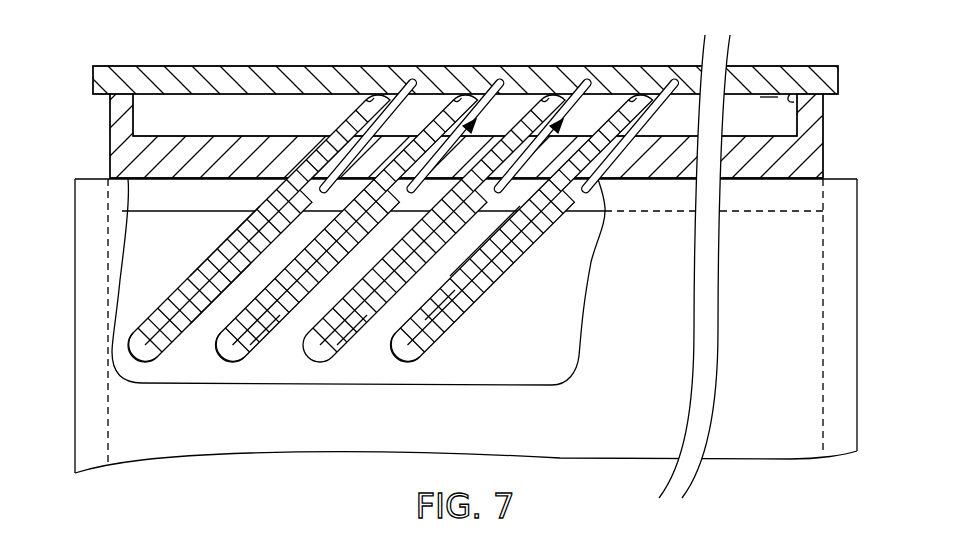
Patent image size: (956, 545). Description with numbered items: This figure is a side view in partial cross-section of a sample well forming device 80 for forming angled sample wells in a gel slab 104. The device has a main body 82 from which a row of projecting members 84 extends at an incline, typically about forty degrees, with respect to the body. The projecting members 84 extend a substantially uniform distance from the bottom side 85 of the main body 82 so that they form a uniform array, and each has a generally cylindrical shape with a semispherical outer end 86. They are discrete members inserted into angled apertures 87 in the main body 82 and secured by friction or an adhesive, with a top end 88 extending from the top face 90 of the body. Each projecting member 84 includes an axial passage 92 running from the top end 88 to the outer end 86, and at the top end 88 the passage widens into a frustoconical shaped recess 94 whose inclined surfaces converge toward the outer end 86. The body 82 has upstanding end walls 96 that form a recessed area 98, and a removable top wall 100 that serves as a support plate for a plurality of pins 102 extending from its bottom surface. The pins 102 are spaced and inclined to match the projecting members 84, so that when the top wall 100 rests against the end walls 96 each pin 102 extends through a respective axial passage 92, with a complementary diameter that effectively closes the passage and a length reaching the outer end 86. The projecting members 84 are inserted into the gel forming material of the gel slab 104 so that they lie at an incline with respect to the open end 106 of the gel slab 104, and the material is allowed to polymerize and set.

The sample well forming device 80 is at (816, 52).
The main body 82 is at (825, 133).
The projecting members 84 is at (170, 290).
The bottom side 85 is at (202, 183).
The outer end 86 is at (137, 362).
The angled apertures 87 is at (284, 183).
The top end 88 is at (366, 106).
The top face 90 is at (240, 128).
The axial passage 92 is at (258, 332).
The frustoconical shaped recess 94 is at (472, 126).
The upstanding end walls 96 is at (790, 94).
The recessed area 98 is at (772, 101).
The removable top wall 100 is at (840, 78).
The pins 102 is at (405, 80).
The gel slab 104 is at (153, 204).
The open end 106 is at (97, 180).